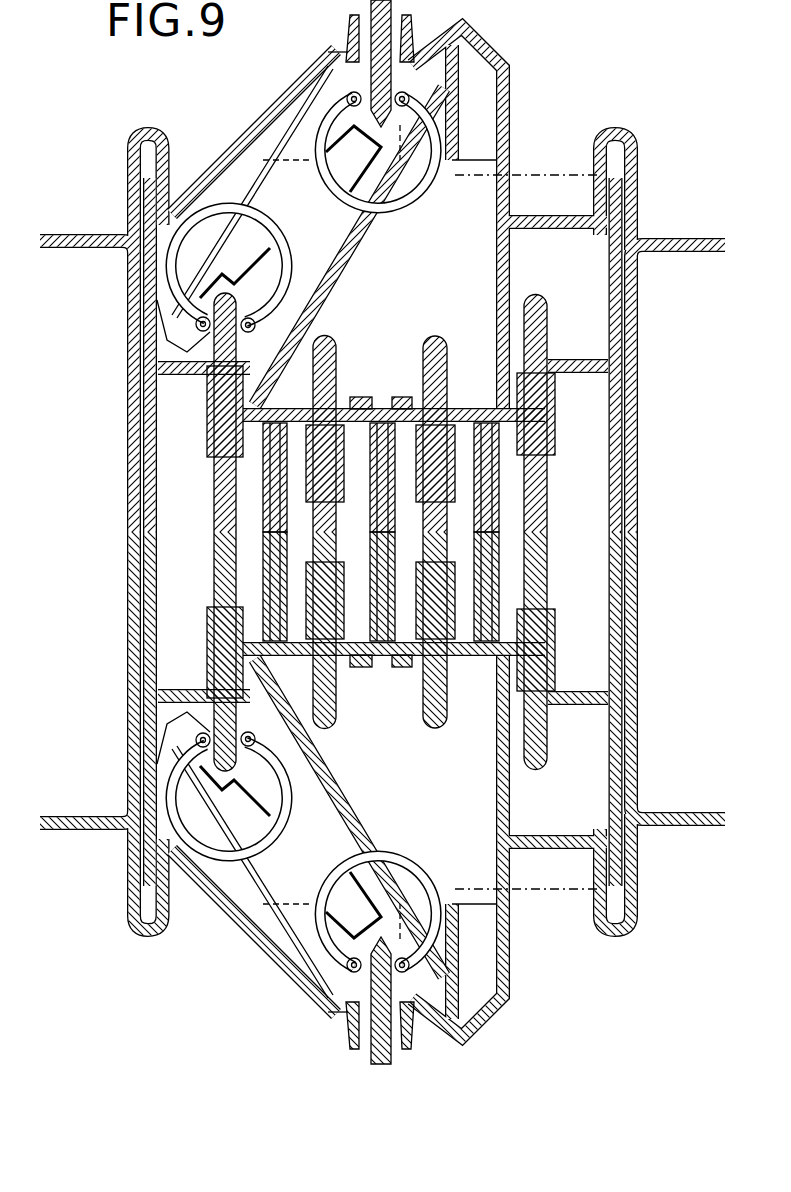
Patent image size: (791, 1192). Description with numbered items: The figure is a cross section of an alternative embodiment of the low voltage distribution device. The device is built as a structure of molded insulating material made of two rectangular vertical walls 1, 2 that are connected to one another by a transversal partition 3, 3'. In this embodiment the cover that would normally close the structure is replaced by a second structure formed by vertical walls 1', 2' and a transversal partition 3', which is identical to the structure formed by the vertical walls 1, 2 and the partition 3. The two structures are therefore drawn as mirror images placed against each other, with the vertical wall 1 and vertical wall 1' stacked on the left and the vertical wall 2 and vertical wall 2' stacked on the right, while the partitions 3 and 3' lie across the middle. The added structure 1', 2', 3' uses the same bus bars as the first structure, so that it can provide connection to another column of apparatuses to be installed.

The vertical wall 1 is at (101, 731).
The vertical wall 1' is at (101, 333).
The vertical wall 2 is at (568, 784).
The vertical wall 2' is at (568, 279).
The transversal partition 3 is at (356, 651).
The transversal partition 3' is at (356, 412).